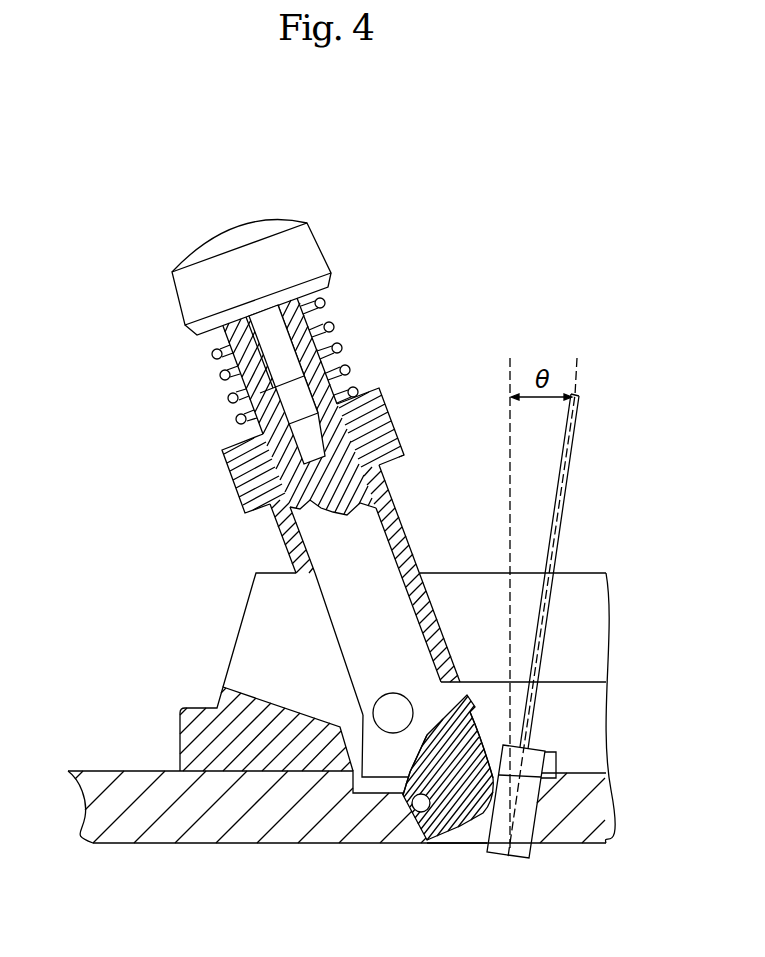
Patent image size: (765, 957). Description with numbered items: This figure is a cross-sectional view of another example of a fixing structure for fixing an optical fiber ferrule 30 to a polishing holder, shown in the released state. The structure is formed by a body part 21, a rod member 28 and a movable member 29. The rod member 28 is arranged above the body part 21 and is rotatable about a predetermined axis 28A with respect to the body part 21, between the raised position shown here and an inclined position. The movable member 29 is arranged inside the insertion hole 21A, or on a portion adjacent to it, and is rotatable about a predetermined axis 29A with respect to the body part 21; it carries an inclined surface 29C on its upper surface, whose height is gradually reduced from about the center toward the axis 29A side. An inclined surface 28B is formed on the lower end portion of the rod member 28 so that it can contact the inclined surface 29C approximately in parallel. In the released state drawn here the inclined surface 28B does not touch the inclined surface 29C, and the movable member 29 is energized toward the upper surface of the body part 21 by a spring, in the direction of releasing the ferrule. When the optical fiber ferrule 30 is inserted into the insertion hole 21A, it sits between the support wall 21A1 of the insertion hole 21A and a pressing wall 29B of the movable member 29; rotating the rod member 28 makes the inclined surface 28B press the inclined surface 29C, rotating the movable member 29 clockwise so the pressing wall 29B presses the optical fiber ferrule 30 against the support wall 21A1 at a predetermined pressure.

The body part 21 is at (247, 828).
The insertion hole 21A is at (486, 833).
The support wall 21A1 is at (538, 808).
The rod member 28 is at (383, 606).
The axis 28A is at (392, 713).
The inclined surface 28B is at (380, 788).
The movable member 29 is at (450, 822).
The axis 29A is at (420, 805).
The pressing wall 29B is at (487, 750).
The inclined surface 29C is at (405, 756).
The optical fiber ferrule 30 is at (527, 763).